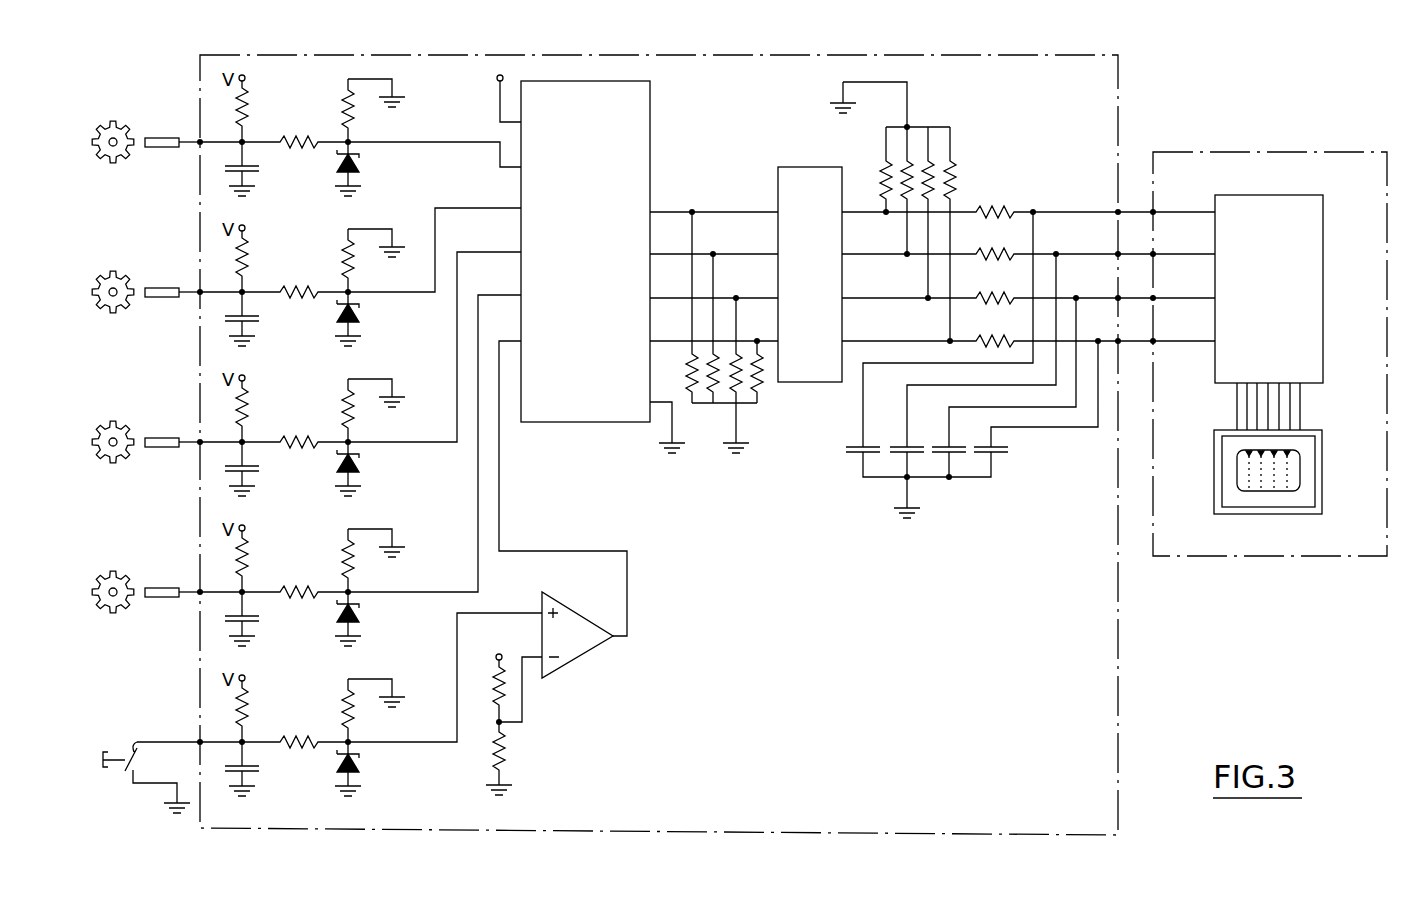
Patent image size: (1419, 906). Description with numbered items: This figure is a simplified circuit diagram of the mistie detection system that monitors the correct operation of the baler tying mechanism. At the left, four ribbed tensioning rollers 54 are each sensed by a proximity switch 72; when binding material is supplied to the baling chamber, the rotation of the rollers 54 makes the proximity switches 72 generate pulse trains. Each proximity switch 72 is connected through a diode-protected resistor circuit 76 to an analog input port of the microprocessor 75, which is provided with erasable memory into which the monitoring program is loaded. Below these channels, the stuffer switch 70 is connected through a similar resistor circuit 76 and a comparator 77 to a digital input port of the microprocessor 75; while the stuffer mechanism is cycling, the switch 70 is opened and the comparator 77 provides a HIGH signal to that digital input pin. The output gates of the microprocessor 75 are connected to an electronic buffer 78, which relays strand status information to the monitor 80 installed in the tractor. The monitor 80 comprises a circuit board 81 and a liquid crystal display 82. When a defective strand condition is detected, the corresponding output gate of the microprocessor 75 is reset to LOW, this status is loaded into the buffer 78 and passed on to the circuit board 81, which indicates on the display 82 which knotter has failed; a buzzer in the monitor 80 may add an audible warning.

The ribbed tensioning rollers 54 is at (137, 122).
The proximity switches 72 is at (165, 137).
The diode-protected resistor circuits 76 is at (416, 131).
The stuffer switch 70 is at (118, 742).
The microprocessor 75 is at (565, 424).
The comparator 77 is at (577, 660).
The electronic buffer 78 is at (803, 384).
The monitor 80 is at (1210, 557).
The circuit board 81 is at (1323, 333).
The liquid crystal display 82 is at (1322, 496).